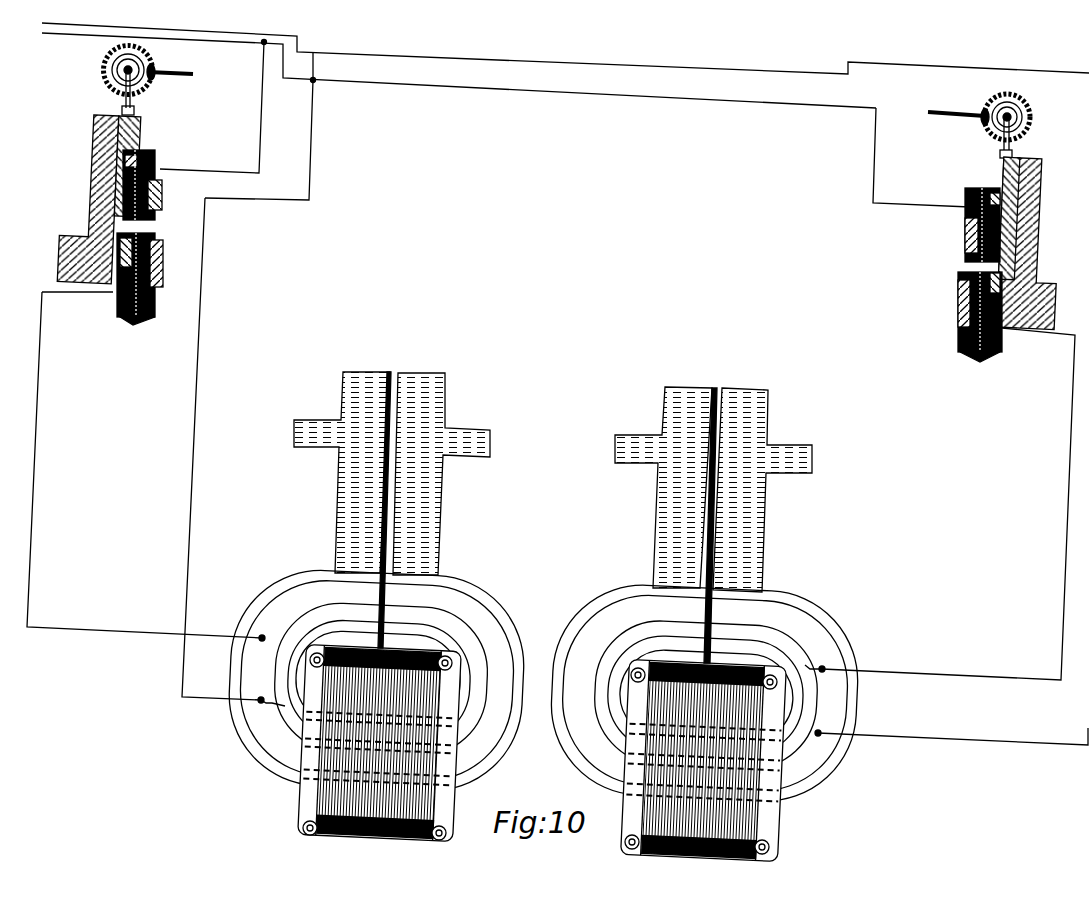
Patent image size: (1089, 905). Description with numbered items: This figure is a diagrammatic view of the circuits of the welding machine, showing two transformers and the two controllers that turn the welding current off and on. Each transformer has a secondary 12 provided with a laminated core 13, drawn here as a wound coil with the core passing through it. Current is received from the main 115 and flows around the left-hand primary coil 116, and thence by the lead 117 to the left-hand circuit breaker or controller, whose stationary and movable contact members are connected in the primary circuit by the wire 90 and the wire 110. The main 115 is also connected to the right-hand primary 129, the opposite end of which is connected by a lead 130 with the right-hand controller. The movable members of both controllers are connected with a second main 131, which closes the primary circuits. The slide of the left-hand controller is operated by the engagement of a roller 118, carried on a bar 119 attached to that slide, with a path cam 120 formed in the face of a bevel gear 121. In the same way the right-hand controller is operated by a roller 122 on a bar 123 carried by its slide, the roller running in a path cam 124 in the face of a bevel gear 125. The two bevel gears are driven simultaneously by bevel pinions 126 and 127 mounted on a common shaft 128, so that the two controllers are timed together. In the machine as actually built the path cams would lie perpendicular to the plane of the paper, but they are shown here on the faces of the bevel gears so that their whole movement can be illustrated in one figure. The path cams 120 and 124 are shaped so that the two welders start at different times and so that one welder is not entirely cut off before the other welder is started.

The secondary 12 is at (433, 422).
The laminated core 13 is at (333, 795).
The wire 90 is at (72, 293).
The wire 110 is at (183, 173).
The main 115 is at (507, 59).
The primary coil 116 is at (277, 723).
The lead 117 is at (80, 623).
The roller 118 is at (123, 78).
The bar 119 is at (120, 107).
The path cam 120 is at (115, 72).
The bevel gear 121 is at (143, 95).
The roller 122 is at (1000, 137).
The bar 123 is at (1008, 152).
The path cam 124 is at (990, 127).
The bevel gear 125 is at (1028, 105).
The bevel pinion 126 is at (153, 78).
The bevel pinion 127 is at (987, 112).
The shaft 128 is at (181, 72).
The right-hand primary 129 is at (803, 757).
The lead 130 is at (950, 675).
The main 131 is at (521, 92).